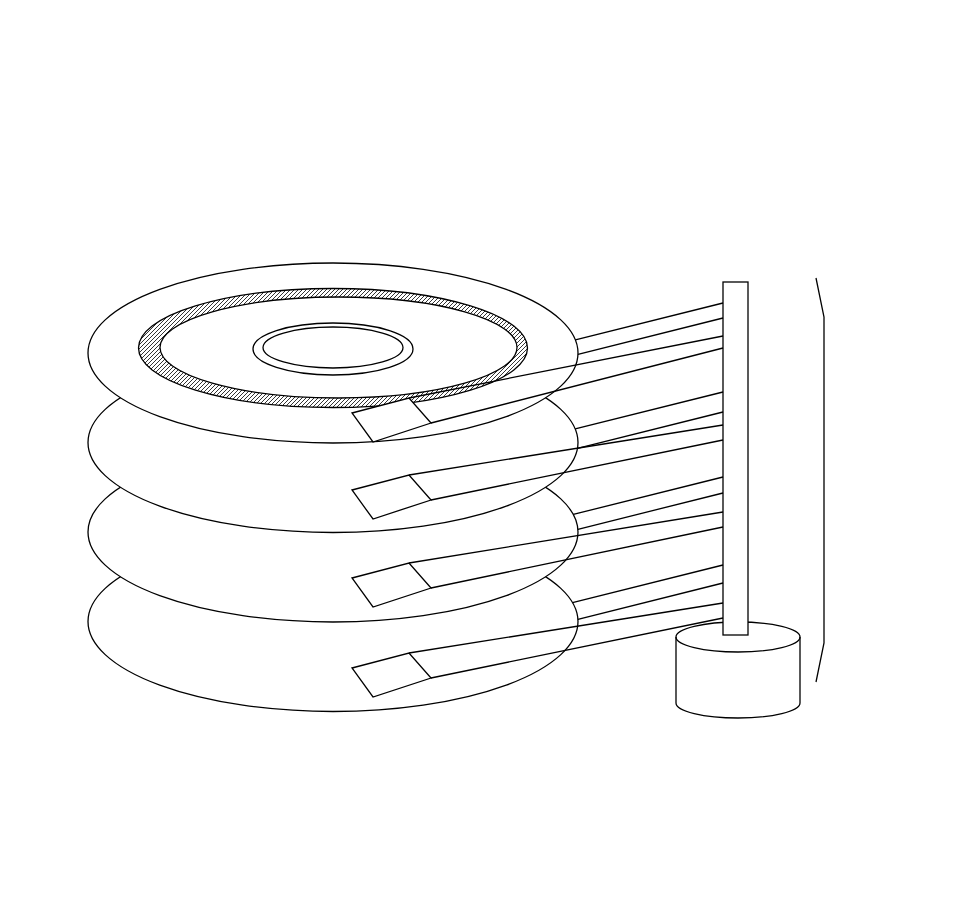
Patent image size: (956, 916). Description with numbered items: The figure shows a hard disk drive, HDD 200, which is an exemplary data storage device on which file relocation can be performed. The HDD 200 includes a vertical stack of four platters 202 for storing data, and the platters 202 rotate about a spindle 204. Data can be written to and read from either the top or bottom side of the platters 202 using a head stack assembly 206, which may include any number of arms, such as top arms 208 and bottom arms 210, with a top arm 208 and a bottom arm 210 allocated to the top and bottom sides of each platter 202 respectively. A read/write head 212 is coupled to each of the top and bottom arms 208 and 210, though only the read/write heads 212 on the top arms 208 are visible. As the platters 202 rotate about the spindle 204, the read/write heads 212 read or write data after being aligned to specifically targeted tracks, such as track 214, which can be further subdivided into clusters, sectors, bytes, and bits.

The HDD 200 is at (552, 88).
The platter 202 is at (128, 313).
The spindle 204 is at (333, 345).
The head stack assembly 206 is at (824, 480).
The top arm 208 is at (713, 337).
The bottom arm 210 is at (713, 313).
The read/write head 212 is at (377, 429).
The track 214 is at (250, 294).